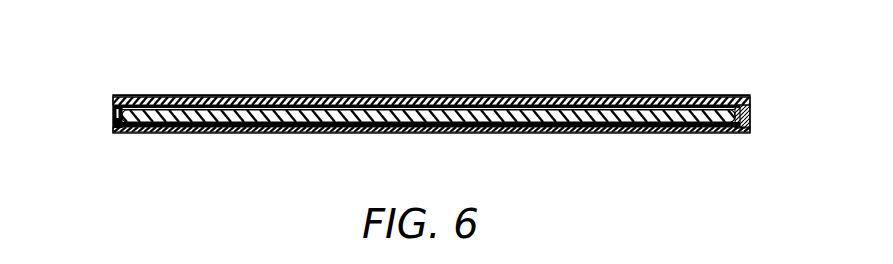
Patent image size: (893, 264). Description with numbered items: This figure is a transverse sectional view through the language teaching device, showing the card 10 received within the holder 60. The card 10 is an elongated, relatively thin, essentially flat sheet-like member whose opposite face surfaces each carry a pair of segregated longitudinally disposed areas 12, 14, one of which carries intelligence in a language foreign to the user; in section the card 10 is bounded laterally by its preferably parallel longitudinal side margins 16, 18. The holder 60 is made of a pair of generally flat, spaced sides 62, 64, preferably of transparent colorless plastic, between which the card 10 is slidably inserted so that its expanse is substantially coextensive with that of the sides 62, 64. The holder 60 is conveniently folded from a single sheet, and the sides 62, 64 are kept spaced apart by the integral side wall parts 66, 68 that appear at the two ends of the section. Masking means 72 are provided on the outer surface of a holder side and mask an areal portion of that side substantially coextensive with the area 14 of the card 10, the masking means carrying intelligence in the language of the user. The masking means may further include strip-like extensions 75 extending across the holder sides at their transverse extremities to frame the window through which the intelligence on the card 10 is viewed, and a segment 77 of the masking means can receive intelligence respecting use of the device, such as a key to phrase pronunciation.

The holder 60 is at (109, 99).
The segment of masking means 77 is at (135, 97).
The longitudinally disposed area 14 is at (245, 110).
The masking means 72 is at (303, 100).
The side of holder 62 is at (463, 103).
The strip-like extension 75 is at (592, 96).
The longitudinally disposed area 12 is at (648, 108).
The side wall part 68 is at (750, 115).
The side wall part 66 is at (112, 115).
The longitudinal side margin 16 is at (126, 120).
The card 10 is at (248, 128).
The side of holder 64 is at (360, 130).
The longitudinal side margin 18 is at (717, 133).